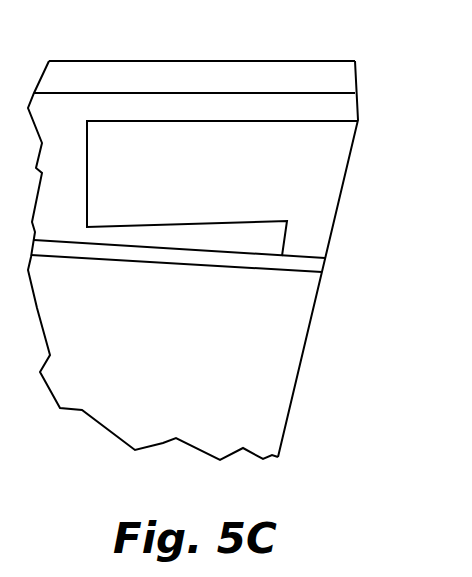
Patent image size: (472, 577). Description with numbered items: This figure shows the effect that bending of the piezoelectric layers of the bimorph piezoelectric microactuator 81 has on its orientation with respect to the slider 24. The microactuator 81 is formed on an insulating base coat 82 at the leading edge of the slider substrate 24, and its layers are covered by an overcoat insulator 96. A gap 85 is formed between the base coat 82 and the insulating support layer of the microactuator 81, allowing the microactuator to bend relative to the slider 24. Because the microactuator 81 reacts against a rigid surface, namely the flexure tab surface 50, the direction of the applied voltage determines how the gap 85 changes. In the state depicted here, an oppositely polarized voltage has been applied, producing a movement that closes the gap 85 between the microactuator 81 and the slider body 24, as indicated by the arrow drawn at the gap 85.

The slider substrate 24 is at (287, 325).
The flexure tab surface 50 is at (188, 61).
The bimorph piezoelectric microactuator 81 is at (348, 165).
The insulating base coat 82 is at (313, 265).
The gap 85 is at (146, 238).
The overcoat insulator 96 is at (340, 105).